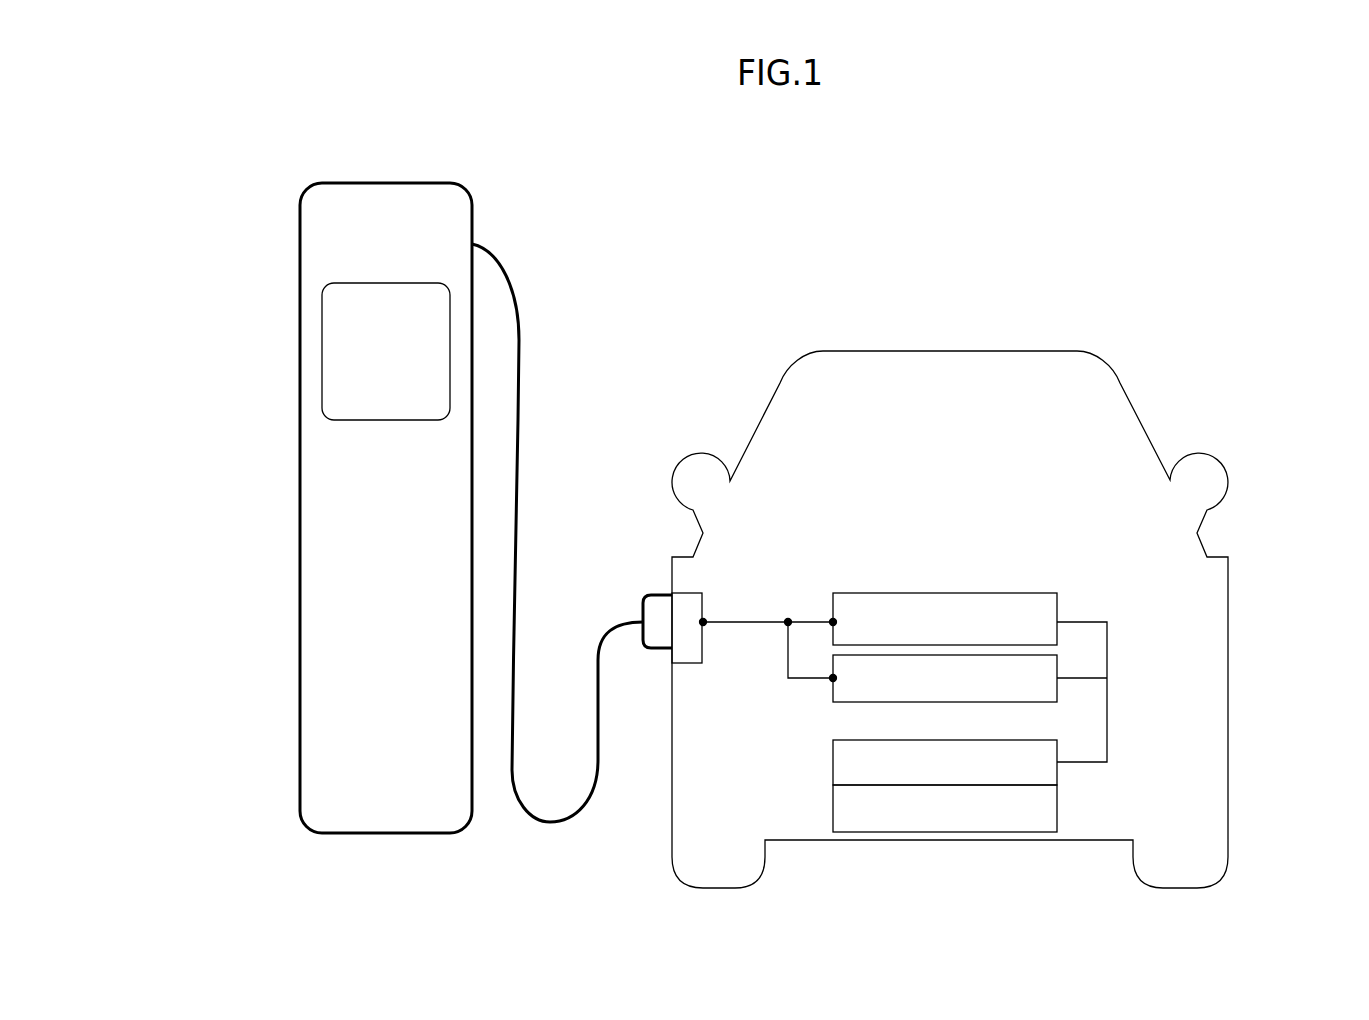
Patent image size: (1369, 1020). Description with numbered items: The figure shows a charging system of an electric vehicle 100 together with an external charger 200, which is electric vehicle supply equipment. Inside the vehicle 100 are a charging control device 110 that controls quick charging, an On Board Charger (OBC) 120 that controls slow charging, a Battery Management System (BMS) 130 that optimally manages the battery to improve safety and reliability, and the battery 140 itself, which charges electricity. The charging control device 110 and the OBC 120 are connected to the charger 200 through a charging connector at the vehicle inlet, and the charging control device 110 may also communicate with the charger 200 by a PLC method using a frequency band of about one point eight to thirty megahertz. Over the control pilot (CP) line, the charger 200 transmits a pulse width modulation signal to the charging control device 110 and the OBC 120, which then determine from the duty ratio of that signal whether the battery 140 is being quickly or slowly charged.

The electric vehicle 100 is at (938, 368).
The charging control device 110 is at (938, 592).
The On Board Charger (OBC) 120 is at (833, 700).
The Battery Management System (BMS) 130 is at (833, 762).
The battery 140 is at (833, 812).
The charger (electric vehicle supply equipment, EVSE) 200 is at (300, 362).